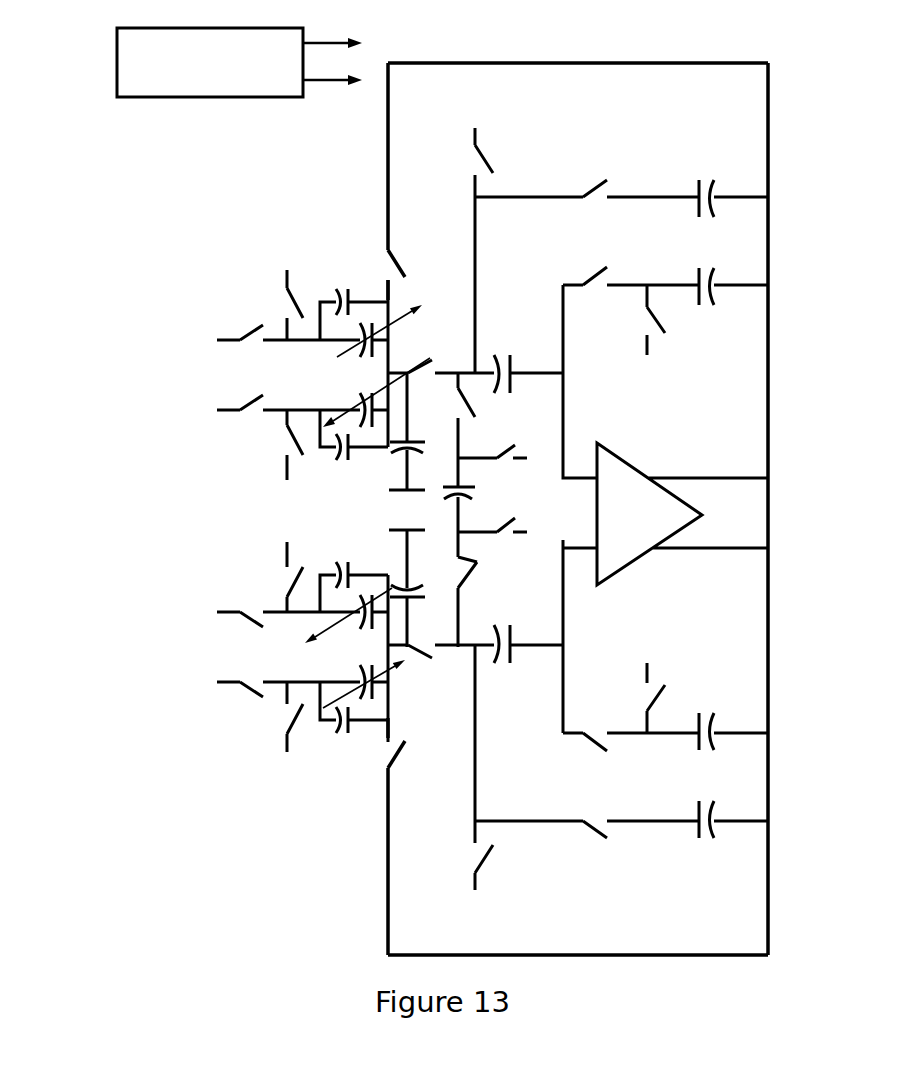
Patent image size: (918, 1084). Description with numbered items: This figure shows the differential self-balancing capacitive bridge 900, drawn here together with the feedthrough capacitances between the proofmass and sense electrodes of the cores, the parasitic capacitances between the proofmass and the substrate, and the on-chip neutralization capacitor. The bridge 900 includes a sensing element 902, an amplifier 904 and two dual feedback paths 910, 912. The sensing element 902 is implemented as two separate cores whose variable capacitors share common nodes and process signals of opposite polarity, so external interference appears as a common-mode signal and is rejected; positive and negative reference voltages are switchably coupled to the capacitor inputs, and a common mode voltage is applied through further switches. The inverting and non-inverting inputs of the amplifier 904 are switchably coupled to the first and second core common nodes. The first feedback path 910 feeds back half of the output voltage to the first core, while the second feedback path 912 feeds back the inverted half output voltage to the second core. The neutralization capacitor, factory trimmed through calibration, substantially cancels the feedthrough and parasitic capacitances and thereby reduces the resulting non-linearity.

The differential self-balancing capacitive bridge 900 is at (453, 491).
The sensing element 902 is at (204, 521).
The amplifier 904 is at (794, 327).
The first feedback path 910 is at (652, 64).
The second feedback path 912 is at (648, 952).